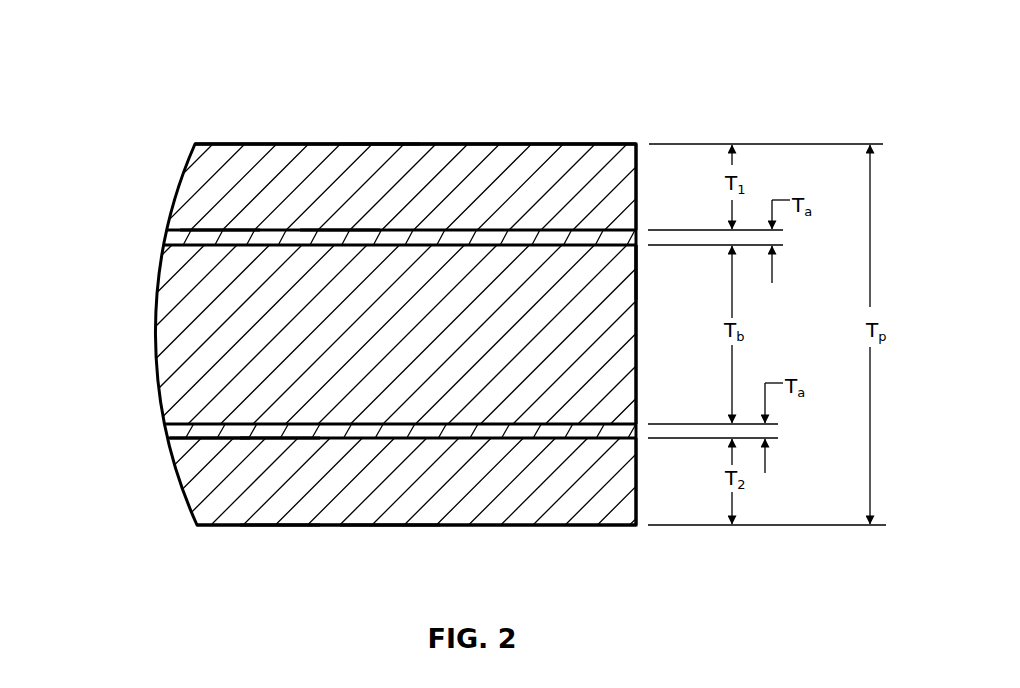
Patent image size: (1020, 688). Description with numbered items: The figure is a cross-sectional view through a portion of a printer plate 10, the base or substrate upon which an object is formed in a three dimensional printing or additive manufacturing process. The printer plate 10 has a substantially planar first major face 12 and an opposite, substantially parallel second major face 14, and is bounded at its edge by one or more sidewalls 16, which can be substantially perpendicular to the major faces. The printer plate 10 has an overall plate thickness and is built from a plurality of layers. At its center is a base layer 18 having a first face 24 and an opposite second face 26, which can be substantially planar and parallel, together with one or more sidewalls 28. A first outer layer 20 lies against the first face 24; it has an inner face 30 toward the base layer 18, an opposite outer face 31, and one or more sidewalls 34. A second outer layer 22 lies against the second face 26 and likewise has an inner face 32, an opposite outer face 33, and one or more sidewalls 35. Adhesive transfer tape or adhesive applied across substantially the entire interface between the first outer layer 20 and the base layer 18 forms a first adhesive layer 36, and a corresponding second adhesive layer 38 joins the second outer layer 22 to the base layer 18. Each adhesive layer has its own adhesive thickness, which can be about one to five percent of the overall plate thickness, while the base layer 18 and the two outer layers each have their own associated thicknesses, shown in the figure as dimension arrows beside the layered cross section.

The printer plate 10 is at (289, 29).
The first major face 12 is at (414, 105).
The second major face 14 is at (391, 545).
The sidewall 16 is at (657, 347).
The base layer 18 is at (304, 323).
The first outer layer 20 is at (482, 177).
The second outer layer 22 is at (500, 491).
The first face 24 is at (261, 247).
The second face 26 is at (239, 417).
The sidewall 28 is at (642, 262).
The inner face 30 is at (337, 227).
The outer face 31 is at (381, 138).
The inner face 32 is at (277, 444).
The outer face 33 is at (280, 531).
The sidewall 34 is at (641, 218).
The sidewall 35 is at (642, 449).
The first adhesive layer 36 is at (221, 228).
The second adhesive layer 38 is at (203, 439).